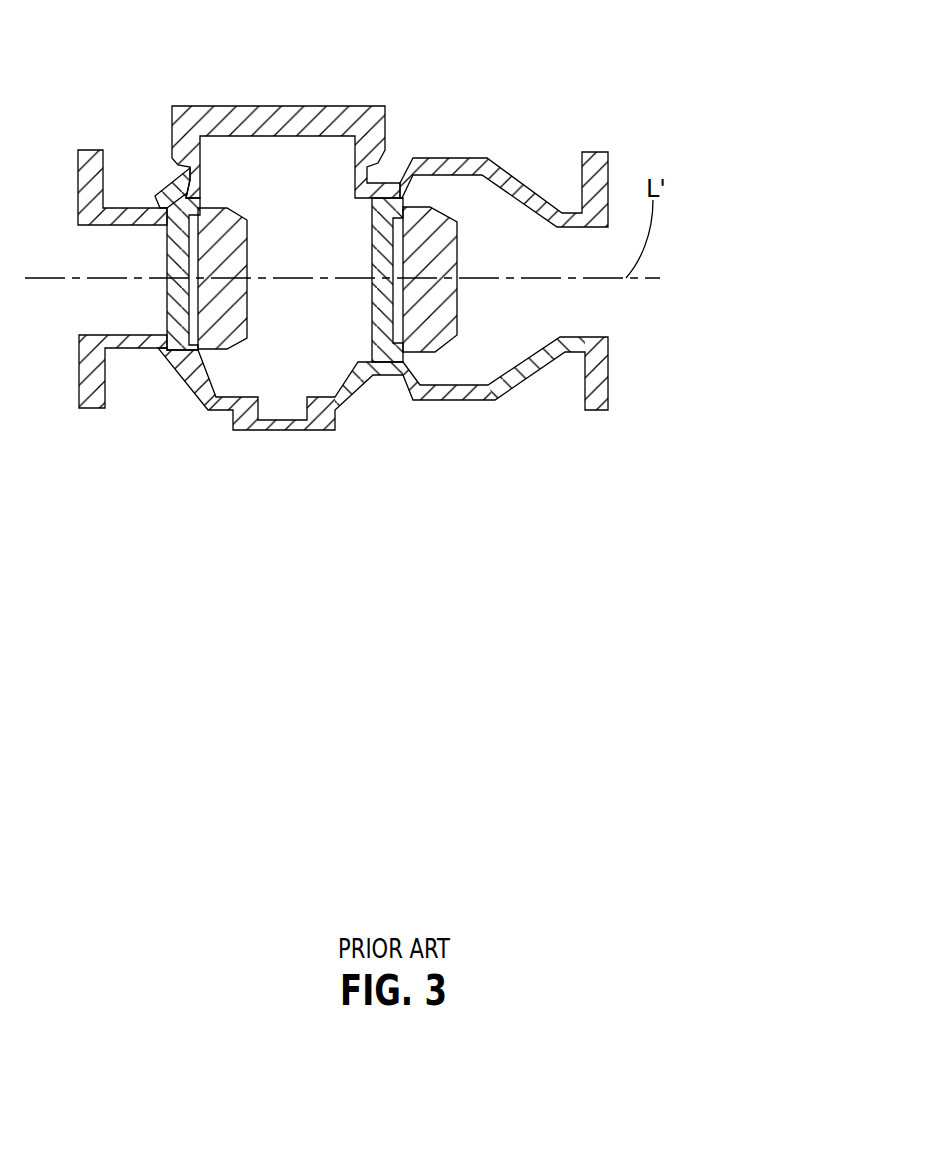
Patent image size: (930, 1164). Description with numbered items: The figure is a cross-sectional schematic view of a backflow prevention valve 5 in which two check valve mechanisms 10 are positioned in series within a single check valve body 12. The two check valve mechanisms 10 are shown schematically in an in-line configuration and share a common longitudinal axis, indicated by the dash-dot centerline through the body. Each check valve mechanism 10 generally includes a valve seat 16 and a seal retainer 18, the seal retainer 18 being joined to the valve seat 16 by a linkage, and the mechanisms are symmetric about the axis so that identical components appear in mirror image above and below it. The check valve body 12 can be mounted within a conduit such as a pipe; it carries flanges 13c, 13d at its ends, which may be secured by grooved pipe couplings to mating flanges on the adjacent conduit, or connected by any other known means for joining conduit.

The backflow prevention valve 5 is at (430, 118).
The check valve mechanism 10 is at (260, 298).
The check valve body 12 is at (292, 105).
The flange 13c is at (80, 409).
The flange 13d is at (609, 399).
The valve seat 16 is at (165, 207).
The seal retainer 18 is at (222, 222).